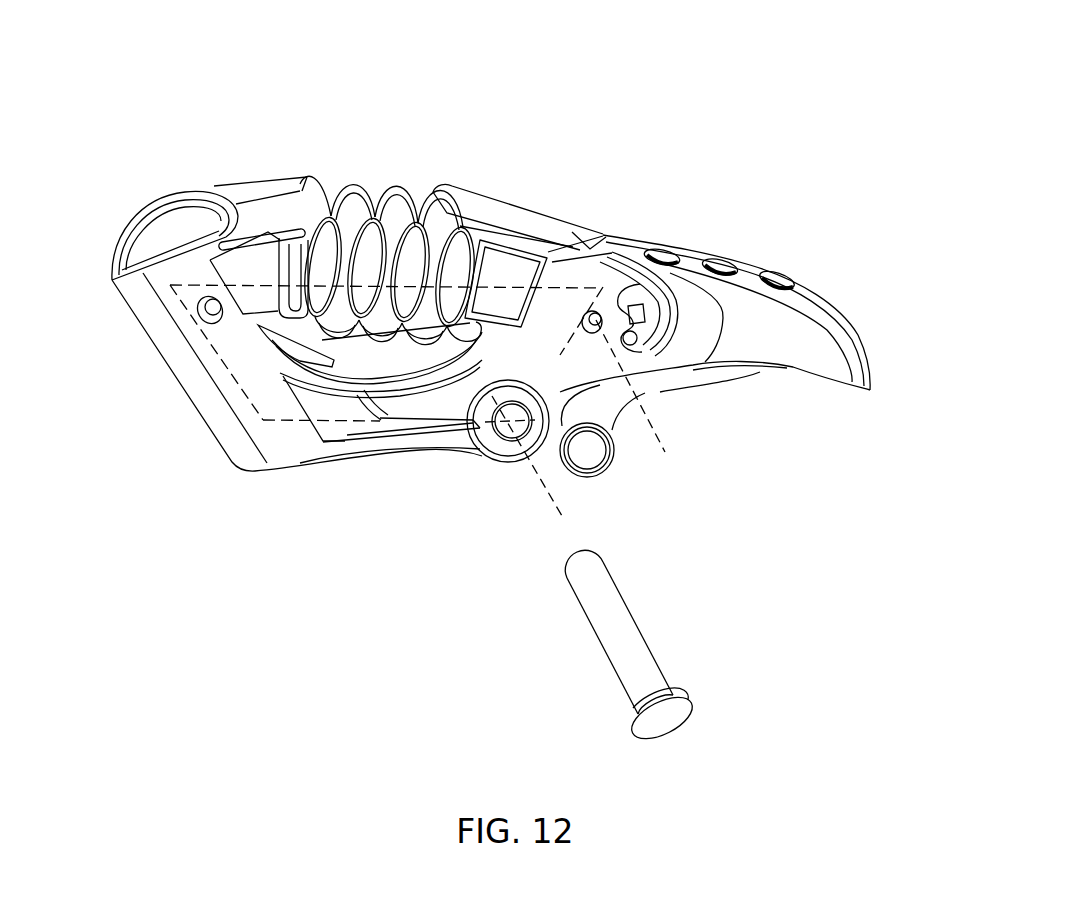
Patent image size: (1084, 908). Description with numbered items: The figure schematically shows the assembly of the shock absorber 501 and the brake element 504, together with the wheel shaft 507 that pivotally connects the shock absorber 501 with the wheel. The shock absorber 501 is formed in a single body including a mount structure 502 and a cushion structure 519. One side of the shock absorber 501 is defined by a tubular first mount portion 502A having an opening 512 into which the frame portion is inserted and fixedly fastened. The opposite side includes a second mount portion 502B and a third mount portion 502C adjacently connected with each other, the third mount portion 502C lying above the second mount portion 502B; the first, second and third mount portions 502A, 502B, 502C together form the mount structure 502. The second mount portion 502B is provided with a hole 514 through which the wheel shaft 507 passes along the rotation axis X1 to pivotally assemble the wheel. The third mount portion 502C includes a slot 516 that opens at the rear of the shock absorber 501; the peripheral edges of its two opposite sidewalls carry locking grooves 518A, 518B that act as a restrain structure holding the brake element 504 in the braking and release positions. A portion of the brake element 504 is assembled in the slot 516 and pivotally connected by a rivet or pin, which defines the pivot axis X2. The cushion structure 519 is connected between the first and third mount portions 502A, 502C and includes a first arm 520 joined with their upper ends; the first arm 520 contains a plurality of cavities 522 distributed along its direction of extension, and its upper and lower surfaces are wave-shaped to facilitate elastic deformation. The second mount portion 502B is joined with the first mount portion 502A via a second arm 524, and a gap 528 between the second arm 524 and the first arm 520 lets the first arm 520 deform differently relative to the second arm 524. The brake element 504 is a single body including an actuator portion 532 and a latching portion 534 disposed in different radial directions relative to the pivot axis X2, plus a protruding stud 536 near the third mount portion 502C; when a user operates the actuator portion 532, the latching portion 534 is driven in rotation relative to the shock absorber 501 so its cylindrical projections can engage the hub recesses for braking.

The shock absorber 501 is at (230, 54).
The mount structure 502 is at (199, 272).
The first mount portion 502A is at (195, 388).
The second mount portion 502B is at (512, 452).
The third mount portion 502C is at (578, 280).
The brake element 504 is at (848, 289).
The wheel shaft 507 is at (650, 668).
The opening 512 is at (150, 203).
The hole 514 is at (490, 455).
The slot 516 is at (608, 222).
The locking groove 518A is at (680, 314).
The locking groove 518B is at (664, 274).
The cushion structure 519 is at (367, 243).
The first arm 520 is at (466, 200).
The cavities 522 is at (276, 228).
The second arm 524 is at (425, 435).
The gap 528 is at (371, 350).
The actuator portion 532 is at (785, 385).
The latching portion 534 is at (612, 462).
The protruding stud 536 is at (670, 375).
The rotation axis X1 is at (563, 517).
The pivot axis X2 is at (665, 452).